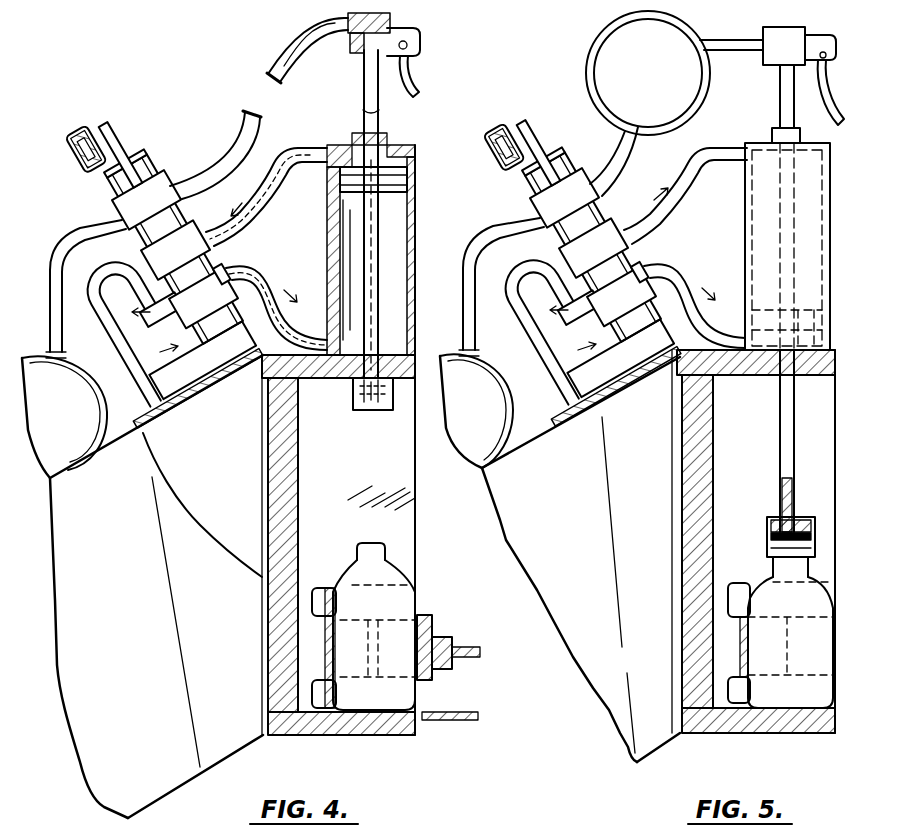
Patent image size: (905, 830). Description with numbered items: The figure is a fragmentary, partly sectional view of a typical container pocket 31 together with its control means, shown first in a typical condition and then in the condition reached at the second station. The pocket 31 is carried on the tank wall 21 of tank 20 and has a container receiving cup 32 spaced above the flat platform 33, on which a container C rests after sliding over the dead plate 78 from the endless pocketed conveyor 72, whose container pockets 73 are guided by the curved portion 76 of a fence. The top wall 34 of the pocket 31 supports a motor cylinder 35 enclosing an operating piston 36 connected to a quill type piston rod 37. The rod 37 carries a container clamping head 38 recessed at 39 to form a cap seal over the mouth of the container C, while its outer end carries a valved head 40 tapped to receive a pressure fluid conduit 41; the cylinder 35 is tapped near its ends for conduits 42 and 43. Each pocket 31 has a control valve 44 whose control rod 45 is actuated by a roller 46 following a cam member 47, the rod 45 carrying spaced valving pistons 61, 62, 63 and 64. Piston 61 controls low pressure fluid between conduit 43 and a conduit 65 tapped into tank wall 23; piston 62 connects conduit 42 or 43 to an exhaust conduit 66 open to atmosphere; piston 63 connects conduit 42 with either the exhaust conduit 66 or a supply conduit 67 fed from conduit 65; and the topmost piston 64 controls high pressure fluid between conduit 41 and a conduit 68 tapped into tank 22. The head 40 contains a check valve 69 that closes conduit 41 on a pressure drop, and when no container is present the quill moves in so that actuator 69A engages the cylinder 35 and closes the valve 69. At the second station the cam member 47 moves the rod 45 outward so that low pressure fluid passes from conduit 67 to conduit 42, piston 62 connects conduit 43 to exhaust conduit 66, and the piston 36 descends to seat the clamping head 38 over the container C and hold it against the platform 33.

In FIG. 4, the tank 20 is at (86, 766).
In FIG. 5, the tank 20 is at (560, 559).
In FIG. 4, the tank wall 21 is at (262, 463).
In FIG. 4, the tank 22 is at (100, 420).
In FIG. 5, the tank 22 is at (494, 411).
In FIG. 4, the tank wall 23 is at (192, 400).
In FIG. 4, the container pocket 31 is at (412, 520).
In FIG. 5, the container pocket 31 is at (736, 551).
In FIG. 4, the container receiving cup 32 is at (335, 648).
In FIG. 5, the container receiving cup 32 is at (694, 643).
In FIG. 4, the platform 33 is at (352, 737).
In FIG. 5, the platform 33 is at (758, 737).
In FIG. 4, the top wall 34 is at (400, 366).
In FIG. 5, the top wall 34 is at (775, 366).
In FIG. 4, the motor cylinder 35 is at (416, 272).
In FIG. 5, the motor cylinder 35 is at (814, 239).
In FIG. 4, the operating piston 36 is at (400, 198).
In FIG. 5, the operating piston 36 is at (812, 322).
In FIG. 4, the quill type piston rod 37 is at (362, 102).
In FIG. 5, the quill type piston rod 37 is at (826, 298).
In FIG. 4, the container clamping head 38 is at (352, 396).
In FIG. 5, the container clamping head 38 is at (777, 518).
In FIG. 4, the recess 39 is at (366, 414).
In FIG. 5, the recess 39 is at (822, 553).
In FIG. 4, the valved head 40 is at (338, 22).
In FIG. 5, the valved head 40 is at (779, 34).
In FIG. 4, the pressure fluid conduit 41 is at (256, 88).
In FIG. 5, the pressure fluid conduit 41 is at (626, 103).
In FIG. 4, the pressure fluid conduit 42 is at (265, 200).
In FIG. 5, the pressure fluid conduit 42 is at (685, 178).
In FIG. 4, the pressure fluid conduit 43 is at (268, 284).
In FIG. 5, the pressure fluid conduit 43 is at (694, 293).
In FIG. 4, the control valve 44 is at (145, 140).
In FIG. 5, the control valve 44 is at (563, 235).
In FIG. 4, the control rod 45 is at (105, 124).
In FIG. 5, the control rod 45 is at (544, 132).
In FIG. 4, the roller 46 is at (77, 132).
In FIG. 5, the roller 46 is at (504, 122).
In FIG. 4, the cam member 47 is at (76, 168).
In FIG. 5, the cam member 47 is at (478, 142).
In FIG. 4, the valving piston 61 is at (240, 312).
In FIG. 5, the valving piston 61 is at (594, 285).
In FIG. 4, the valving piston 62 is at (230, 278).
In FIG. 5, the valving piston 62 is at (657, 262).
In FIG. 4, the valving piston 63 is at (200, 224).
In FIG. 5, the valving piston 63 is at (606, 236).
In FIG. 4, the valving piston 64 is at (176, 178).
In FIG. 5, the valving piston 64 is at (567, 178).
In FIG. 4, the conduit 65 is at (205, 378).
In FIG. 5, the conduit 65 is at (608, 385).
In FIG. 4, the exhaust conduit 66 is at (168, 327).
In FIG. 5, the exhaust conduit 66 is at (575, 321).
In FIG. 4, the supply conduit 67 is at (103, 316).
In FIG. 5, the supply conduit 67 is at (552, 327).
In FIG. 4, the conduit 68 is at (62, 240).
In FIG. 5, the conduit 68 is at (483, 287).
In FIG. 4, the check valve 69 is at (392, 22).
In FIG. 4, the actuator 69A is at (413, 94).
In FIG. 5, the actuator 69A is at (855, 92).
In FIG. 4, the endless pocketed conveyor 72 is at (474, 666).
In FIG. 4, the container pocket 73 is at (432, 622).
In FIG. 4, the curved portion 76 is at (312, 602).
In FIG. 4, the dead plate 78 is at (448, 722).
In FIG. 4, the container C is at (410, 603).
In FIG. 5, the container C is at (807, 632).